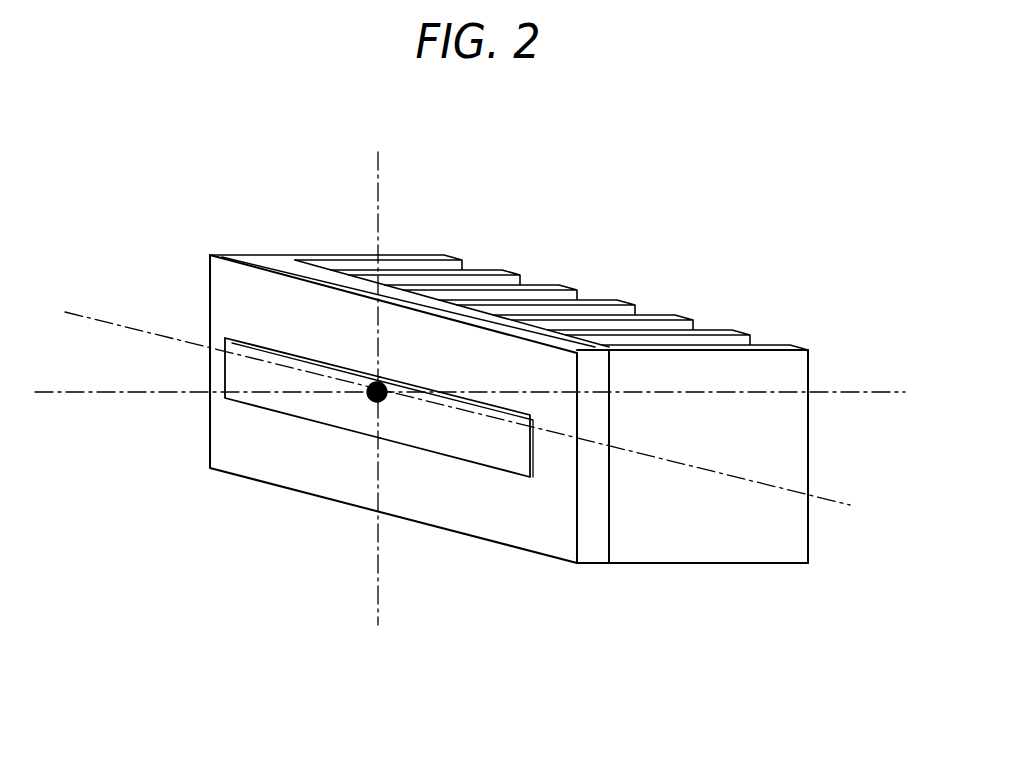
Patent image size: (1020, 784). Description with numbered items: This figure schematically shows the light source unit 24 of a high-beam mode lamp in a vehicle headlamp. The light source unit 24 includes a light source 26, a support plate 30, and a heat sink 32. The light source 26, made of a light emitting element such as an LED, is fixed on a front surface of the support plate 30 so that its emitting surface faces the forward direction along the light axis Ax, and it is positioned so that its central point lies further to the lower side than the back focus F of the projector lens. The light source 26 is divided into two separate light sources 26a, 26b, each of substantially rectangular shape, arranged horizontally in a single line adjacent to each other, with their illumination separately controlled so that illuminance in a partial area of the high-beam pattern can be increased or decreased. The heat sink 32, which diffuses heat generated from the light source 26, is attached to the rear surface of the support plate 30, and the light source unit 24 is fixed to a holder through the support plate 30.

The light source unit 24 is at (480, 443).
The light source 26 is at (347, 521).
The separate light source 26a is at (456, 508).
The separate light source 26b is at (297, 403).
The support plate 30 is at (232, 286).
The heat sink 32 is at (672, 313).
The back focus F is at (368, 387).
The light axis Ax is at (88, 400).